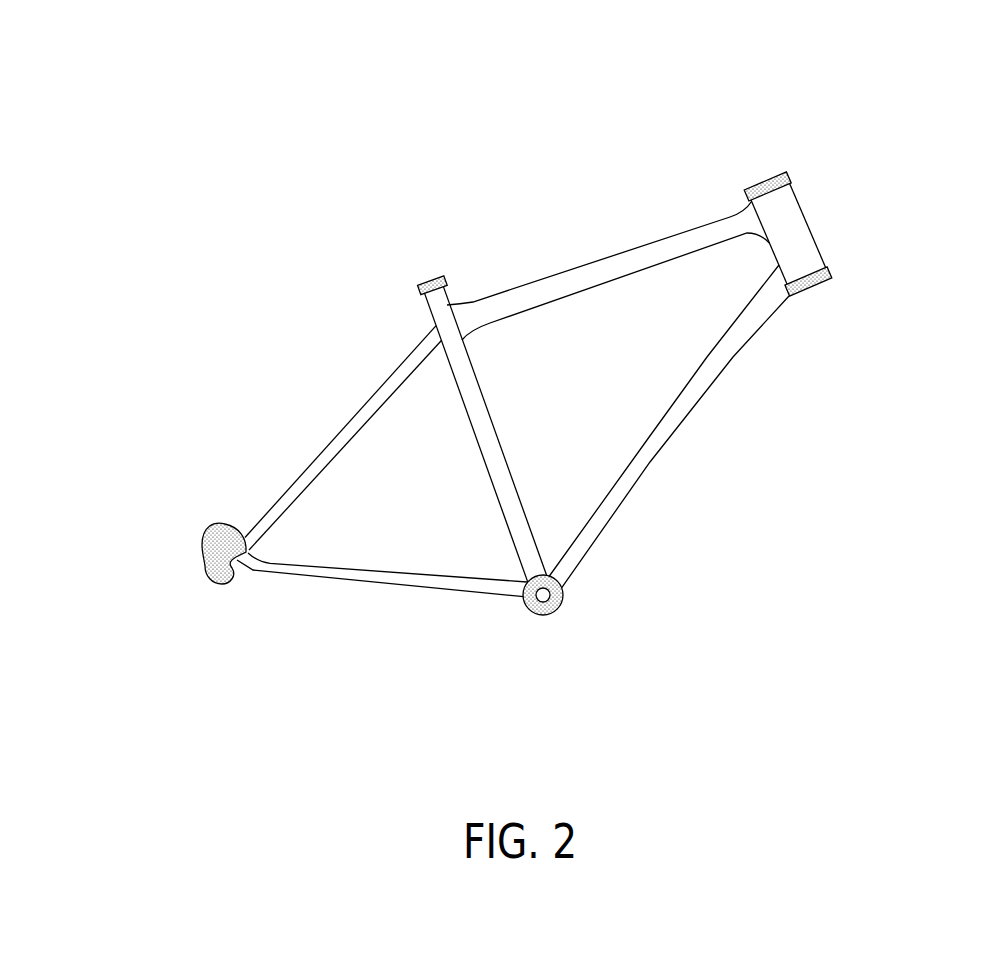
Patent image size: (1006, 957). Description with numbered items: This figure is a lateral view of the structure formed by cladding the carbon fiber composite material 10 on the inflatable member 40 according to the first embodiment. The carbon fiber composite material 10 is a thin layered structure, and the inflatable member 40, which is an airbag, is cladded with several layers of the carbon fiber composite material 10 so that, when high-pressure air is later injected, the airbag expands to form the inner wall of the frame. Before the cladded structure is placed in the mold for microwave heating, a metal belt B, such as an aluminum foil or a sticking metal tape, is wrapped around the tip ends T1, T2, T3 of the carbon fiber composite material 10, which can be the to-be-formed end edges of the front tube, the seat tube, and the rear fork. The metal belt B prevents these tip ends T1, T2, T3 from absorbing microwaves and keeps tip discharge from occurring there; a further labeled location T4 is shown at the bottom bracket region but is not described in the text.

The carbon fiber composite material 10 is at (668, 413).
The inflatable member 40 is at (550, 610).
The metal belt B is at (768, 190).
The tip end T1 is at (784, 162).
The tip end T2 is at (405, 266).
The tip end T3 is at (193, 593).
The bottom bracket joint T4 is at (625, 647).